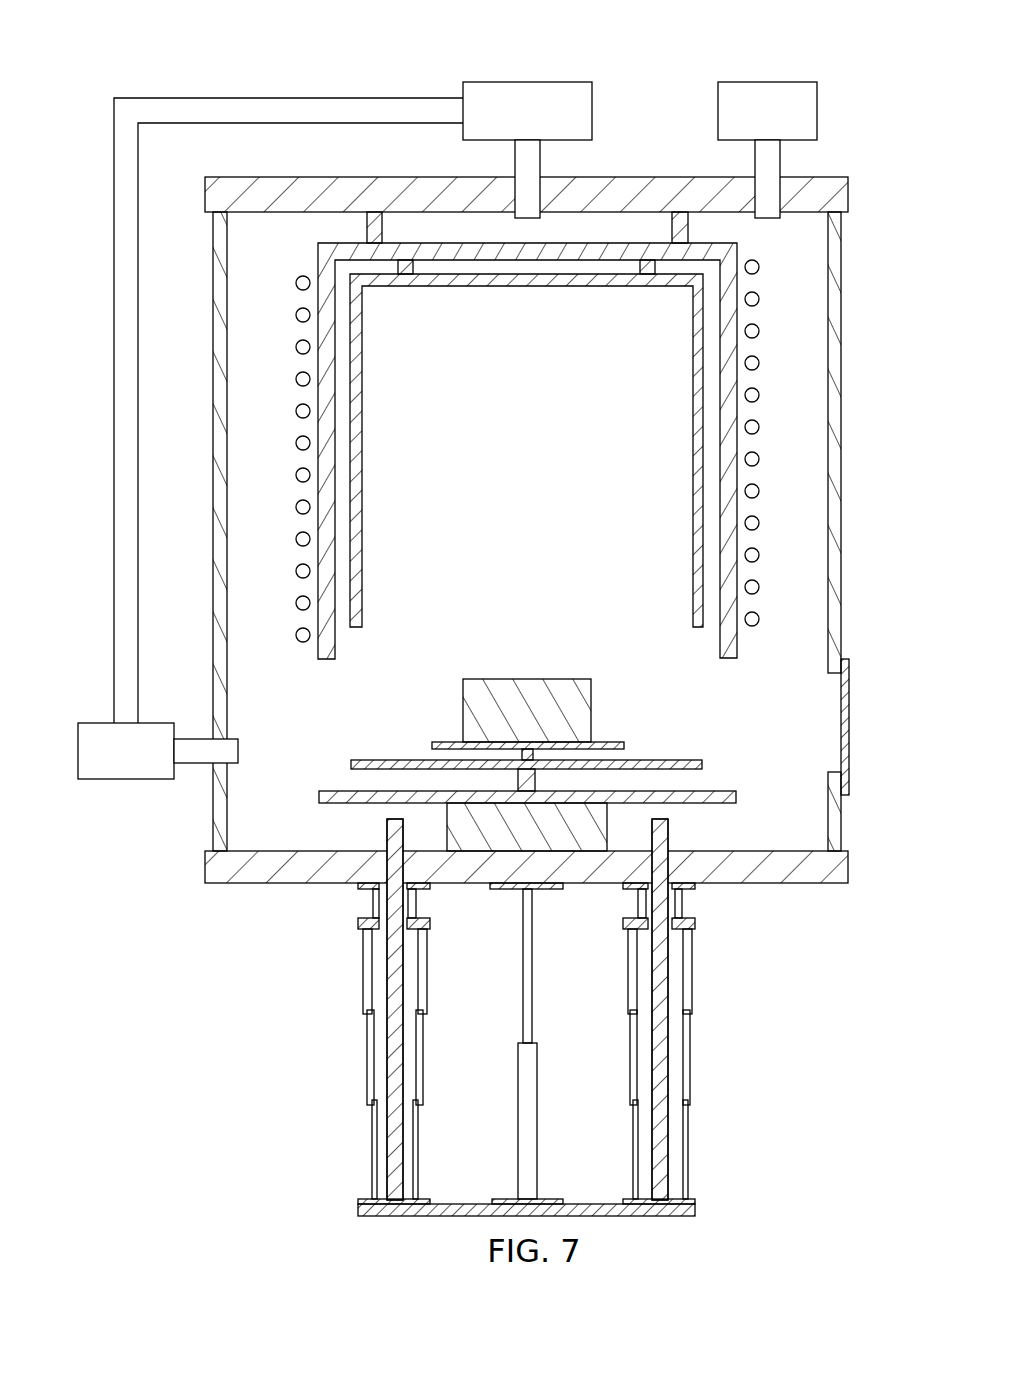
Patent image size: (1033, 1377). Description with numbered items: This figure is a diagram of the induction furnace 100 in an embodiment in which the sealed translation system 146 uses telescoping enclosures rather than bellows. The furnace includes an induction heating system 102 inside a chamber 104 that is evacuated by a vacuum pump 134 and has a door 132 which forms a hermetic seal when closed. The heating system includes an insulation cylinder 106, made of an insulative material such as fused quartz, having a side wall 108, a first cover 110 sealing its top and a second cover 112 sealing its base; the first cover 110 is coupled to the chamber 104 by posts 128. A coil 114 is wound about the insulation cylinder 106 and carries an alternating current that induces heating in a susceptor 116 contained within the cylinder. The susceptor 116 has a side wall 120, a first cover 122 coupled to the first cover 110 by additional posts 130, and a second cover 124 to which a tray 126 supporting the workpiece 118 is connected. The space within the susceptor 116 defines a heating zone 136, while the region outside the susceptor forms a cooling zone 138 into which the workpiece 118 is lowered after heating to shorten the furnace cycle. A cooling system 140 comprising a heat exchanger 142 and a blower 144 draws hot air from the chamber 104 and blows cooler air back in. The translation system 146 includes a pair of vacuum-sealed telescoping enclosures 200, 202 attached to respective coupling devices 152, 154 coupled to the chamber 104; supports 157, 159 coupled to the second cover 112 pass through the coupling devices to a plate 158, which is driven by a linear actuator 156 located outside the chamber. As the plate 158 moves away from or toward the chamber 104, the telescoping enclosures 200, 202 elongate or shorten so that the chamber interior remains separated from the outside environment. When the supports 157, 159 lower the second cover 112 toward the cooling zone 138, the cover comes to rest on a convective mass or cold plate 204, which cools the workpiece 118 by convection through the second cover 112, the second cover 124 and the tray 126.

The induction furnace 100 is at (400, 46).
The induction heating system 102 is at (296, 228).
The chamber 104 is at (398, 177).
The insulation cylinder 106 is at (318, 255).
The side wall 108 is at (318, 392).
The first cover 110 is at (475, 243).
The second cover 112 is at (336, 791).
The coil 114 is at (296, 315).
The susceptor 116 is at (362, 320).
The workpiece 118 is at (560, 679).
The side wall 120 is at (362, 408).
The first cover 122 is at (500, 286).
The second cover 124 is at (670, 760).
The tray 126 is at (448, 742).
The posts 128 is at (374, 230).
The additional posts 130 is at (406, 274).
The door 132 is at (841, 697).
The vacuum pump 134 is at (757, 82).
The heating zone 136 is at (495, 530).
The cooling zone 138 is at (372, 697).
The cooling system 140 is at (138, 75).
The heat exchanger 142 is at (483, 82).
The blower 144 is at (90, 723).
The sealed translation system 146 is at (300, 1040).
The coupling device 152 is at (358, 902).
The coupling device 154 is at (695, 902).
The linear actuator 156 is at (518, 1078).
The support 157 is at (387, 828).
The plate 158 is at (598, 1204).
The support 159 is at (668, 828).
The telescoping enclosure 200 is at (363, 1010).
The telescoping enclosure 202 is at (692, 1010).
The convective mass or cold plate 204 is at (486, 870).